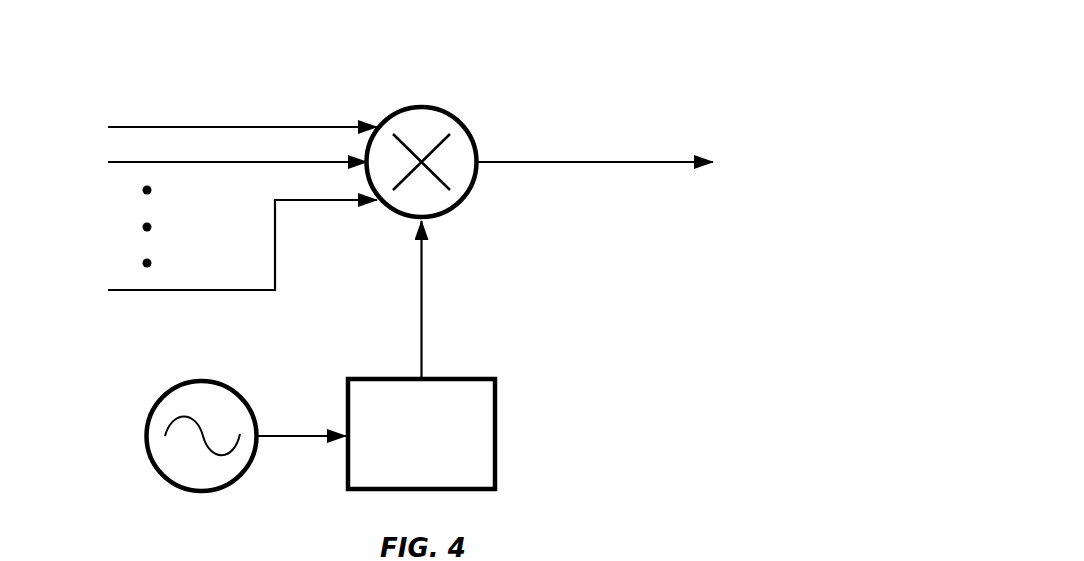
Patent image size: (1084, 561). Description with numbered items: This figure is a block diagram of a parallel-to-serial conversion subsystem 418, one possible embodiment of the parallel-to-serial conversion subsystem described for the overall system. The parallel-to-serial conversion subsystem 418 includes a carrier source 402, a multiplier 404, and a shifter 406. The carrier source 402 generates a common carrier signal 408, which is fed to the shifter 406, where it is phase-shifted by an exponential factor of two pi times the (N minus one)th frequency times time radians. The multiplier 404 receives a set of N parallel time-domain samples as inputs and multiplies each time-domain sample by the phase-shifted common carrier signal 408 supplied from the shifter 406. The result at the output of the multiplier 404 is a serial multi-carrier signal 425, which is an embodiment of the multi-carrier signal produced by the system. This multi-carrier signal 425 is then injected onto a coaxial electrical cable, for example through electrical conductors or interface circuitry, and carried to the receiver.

The P/S conversion subsystem 418 is at (899, 56).
The multiplier 404 is at (418, 107).
The serial multi-carrier signal 425 is at (619, 162).
The carrier source 402 is at (203, 380).
The common carrier signal 408 is at (312, 431).
The shifter 406 is at (440, 464).